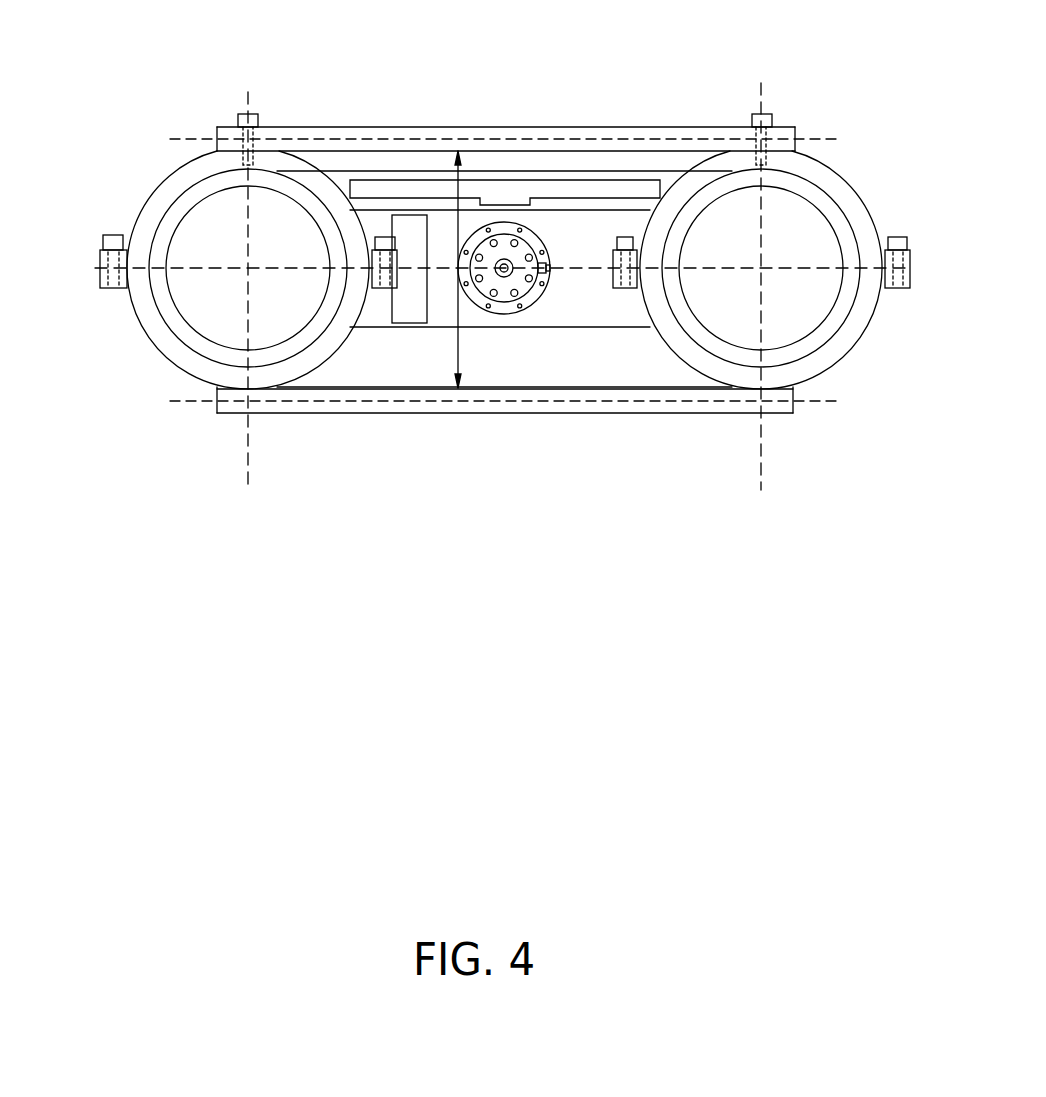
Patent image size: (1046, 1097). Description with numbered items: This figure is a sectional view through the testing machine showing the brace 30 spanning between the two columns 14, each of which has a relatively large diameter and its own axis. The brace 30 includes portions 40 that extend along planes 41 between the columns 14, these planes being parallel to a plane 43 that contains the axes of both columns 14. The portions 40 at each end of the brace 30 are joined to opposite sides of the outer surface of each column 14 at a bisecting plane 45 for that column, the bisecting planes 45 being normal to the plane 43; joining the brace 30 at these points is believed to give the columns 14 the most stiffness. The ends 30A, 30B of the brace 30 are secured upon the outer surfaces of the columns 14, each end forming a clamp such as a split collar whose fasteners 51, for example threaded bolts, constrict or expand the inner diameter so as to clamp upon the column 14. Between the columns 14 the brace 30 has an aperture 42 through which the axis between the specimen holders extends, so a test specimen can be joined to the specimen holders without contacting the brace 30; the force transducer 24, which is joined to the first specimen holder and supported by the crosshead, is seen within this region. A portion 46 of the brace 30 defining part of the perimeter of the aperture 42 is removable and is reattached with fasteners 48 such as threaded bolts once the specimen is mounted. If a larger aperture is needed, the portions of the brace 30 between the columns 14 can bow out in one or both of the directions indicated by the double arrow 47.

The column 14 is at (160, 222).
The force transducer 24 is at (537, 300).
The brace 30 is at (784, 127).
The end of the brace 30A is at (168, 182).
The end of the brace 30B is at (872, 212).
The portion 40 is at (216, 127).
The plane 41 is at (425, 123).
The aperture 42 is at (513, 200).
The plane 43 is at (593, 265).
The bisecting plane 45 is at (248, 92).
The portion 46 is at (458, 150).
The double arrow 47 is at (452, 312).
The fastener 48 is at (259, 125).
The fastener 51 is at (103, 237).